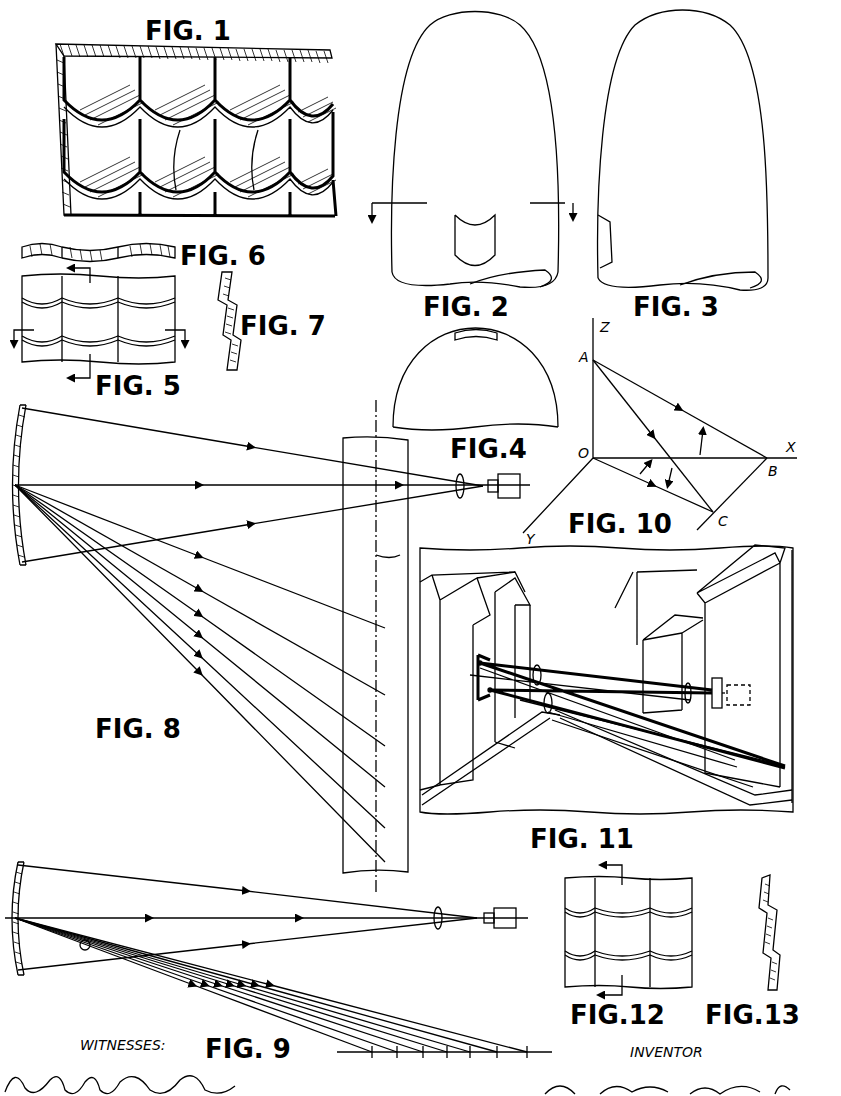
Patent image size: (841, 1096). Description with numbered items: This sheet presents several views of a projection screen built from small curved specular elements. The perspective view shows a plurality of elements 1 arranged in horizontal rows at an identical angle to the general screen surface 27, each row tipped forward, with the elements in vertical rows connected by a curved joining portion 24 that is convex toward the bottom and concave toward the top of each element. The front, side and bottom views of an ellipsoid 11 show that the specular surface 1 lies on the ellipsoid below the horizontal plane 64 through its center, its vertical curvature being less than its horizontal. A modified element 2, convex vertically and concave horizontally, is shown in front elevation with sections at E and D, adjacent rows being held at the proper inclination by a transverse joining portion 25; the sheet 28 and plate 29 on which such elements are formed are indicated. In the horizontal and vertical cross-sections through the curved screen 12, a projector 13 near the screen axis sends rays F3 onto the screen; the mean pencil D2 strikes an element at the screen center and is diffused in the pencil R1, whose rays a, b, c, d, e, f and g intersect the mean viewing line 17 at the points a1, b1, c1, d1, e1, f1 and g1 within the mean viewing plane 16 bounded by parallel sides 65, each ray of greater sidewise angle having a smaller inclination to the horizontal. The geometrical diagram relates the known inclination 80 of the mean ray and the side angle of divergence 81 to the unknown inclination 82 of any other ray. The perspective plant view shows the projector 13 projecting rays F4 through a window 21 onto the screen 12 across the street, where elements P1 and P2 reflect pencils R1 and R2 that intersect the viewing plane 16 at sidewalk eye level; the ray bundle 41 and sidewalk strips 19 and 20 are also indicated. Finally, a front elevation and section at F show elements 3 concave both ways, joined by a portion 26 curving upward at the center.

In FIG. 1, the specular element 1 is at (200, 136).
In FIG. 2, the specular element 1 is at (495, 240).
In FIG. 3, the specular element 1 is at (598, 243).
In FIG. 4, the specular element 1 is at (497, 338).
In FIG. 8, the specular element 1 is at (29, 472).
In FIG. 9, the specular element 1 is at (20, 926).
In FIG. 1, the joining portion 24 is at (345, 185).
In FIG. 1, the general screen surface 27 is at (58, 130).
In FIG. 2, the ellipsoid 11 is at (474, 150).
In FIG. 3, the ellipsoid 11 is at (683, 150).
In FIG. 4, the ellipsoid 11 is at (475, 379).
In FIG. 2, the horizontal plane 64 is at (463, 212).
In FIG. 6, the sheet / plate 28 is at (55, 244).
In FIG. 5, the sheet / plate 28 is at (38, 283).
In FIG. 7, the sheet / plate 28 is at (236, 348).
In FIG. 5, the transverse joining portion 25 is at (78, 340).
In FIG. 7, the transverse joining portion 25 is at (226, 338).
In FIG. 6, the element 2 is at (158, 255).
In FIG. 5, the element 2 is at (98, 319).
In FIG. 7, the element 2 is at (222, 308).
In FIG. 8, the screen 12 is at (24, 458).
In FIG. 11, the screen 12 is at (470, 668).
In FIG. 9, the screen 12 is at (20, 908).
In FIG. 8, the pencil of diffused rays R1 is at (58, 530).
In FIG. 11, the pencil of diffused rays R1 is at (540, 668).
In FIG. 9, the pencil of diffused rays R1 is at (88, 935).
In FIG. 8, the mean pencil of rays D2 is at (204, 484).
In FIG. 9, the mean pencil of rays D2 is at (182, 916).
In FIG. 8, the mean viewing line 17 is at (370, 436).
In FIG. 9, the mean viewing line 17 is at (378, 1058).
In FIG. 8, the rays of light F3 is at (458, 498).
In FIG. 9, the rays of light F3 is at (442, 901).
In FIG. 8, the projector 13 is at (505, 498).
In FIG. 11, the projector 13 is at (737, 685).
In FIG. 9, the projector 13 is at (500, 930).
In FIG. 8, the parallel sides 65 is at (375, 551).
In FIG. 8, the mean viewing plane 16 is at (343, 577).
In FIG. 11, the mean viewing plane 16 is at (715, 738).
In FIG. 9, the mean viewing plane 16 is at (362, 1055).
In FIG. 8, the mean reflected ray a is at (279, 477).
In FIG. 9, the mean reflected ray a is at (258, 964).
In FIG. 8, the reflected ray b is at (200, 556).
In FIG. 9, the reflected ray b is at (262, 980).
In FIG. 8, the reflected ray c is at (200, 590).
In FIG. 9, the reflected ray c is at (287, 964).
In FIG. 8, the reflected ray d is at (200, 615).
In FIG. 9, the reflected ray d is at (290, 982).
In FIG. 8, the reflected ray e is at (200, 636).
In FIG. 9, the reflected ray e is at (315, 967).
In FIG. 8, the reflected ray f is at (200, 656).
In FIG. 9, the reflected ray f is at (320, 985).
In FIG. 8, the reflected ray g is at (200, 673).
In FIG. 9, the reflected ray g is at (342, 972).
In FIG. 8, the intersection point a1 is at (378, 490).
In FIG. 9, the intersection point a1 is at (376, 1059).
In FIG. 8, the intersection point b1 is at (389, 607).
In FIG. 9, the intersection point b1 is at (399, 1061).
In FIG. 8, the intersection point c1 is at (389, 679).
In FIG. 9, the intersection point c1 is at (422, 1059).
In FIG. 8, the intersection point d1 is at (389, 731).
In FIG. 9, the intersection point d1 is at (446, 1059).
In FIG. 8, the intersection point e1 is at (389, 769).
In FIG. 9, the intersection point e1 is at (471, 1058).
In FIG. 8, the intersection point f1 is at (387, 809).
In FIG. 9, the intersection point f1 is at (495, 1059).
In FIG. 8, the intersection point g1 is at (389, 844).
In FIG. 9, the intersection point g1 is at (525, 1058).
In FIG. 10, the angle of inclination 80 is at (714, 442).
In FIG. 10, the side angle of divergence 81 is at (635, 465).
In FIG. 10, the inclination angle 82 is at (679, 482).
In FIG. 11, the element P1 is at (474, 668).
In FIG. 11, the element P2 is at (484, 692).
In FIG. 11, the reflected rays R2 is at (550, 712).
In FIG. 11, the projected rays F4 is at (685, 685).
In FIG. 11, the window or opening 21 is at (717, 678).
In FIG. 11, the ray bundle 41 is at (650, 749).
In FIG. 11, the floor strip 19 is at (485, 770).
In FIG. 11, the floor strip 20 is at (735, 788).
In FIG. 12, the plate 29 is at (700, 868).
In FIG. 13, the plate 29 is at (770, 882).
In FIG. 12, the element 3 is at (628, 932).
In FIG. 13, the element 3 is at (762, 928).
In FIG. 12, the joining portion 26 is at (605, 955).
In FIG. 13, the joining portion 26 is at (762, 950).
In FIG. 5, the section line D- D is at (69, 324).
In FIG. 5, the section line E- E is at (98, 347).
In FIG. 12, the section line F- F is at (599, 930).